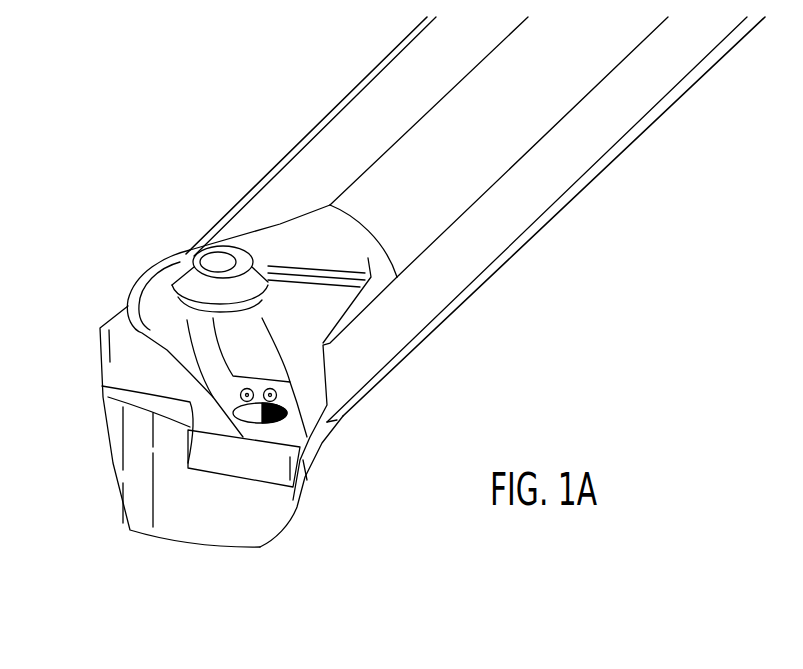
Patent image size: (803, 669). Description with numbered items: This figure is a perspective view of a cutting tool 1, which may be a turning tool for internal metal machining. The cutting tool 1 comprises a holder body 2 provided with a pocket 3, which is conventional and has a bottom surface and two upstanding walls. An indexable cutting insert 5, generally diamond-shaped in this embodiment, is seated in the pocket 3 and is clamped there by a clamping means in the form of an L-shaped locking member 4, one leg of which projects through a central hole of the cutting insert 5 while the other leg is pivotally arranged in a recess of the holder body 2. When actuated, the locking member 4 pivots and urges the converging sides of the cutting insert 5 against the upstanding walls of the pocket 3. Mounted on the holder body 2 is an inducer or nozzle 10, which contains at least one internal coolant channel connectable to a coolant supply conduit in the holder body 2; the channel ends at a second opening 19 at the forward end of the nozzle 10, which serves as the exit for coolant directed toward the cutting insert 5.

The cutting tool 1 is at (177, 160).
The holder body 2 is at (472, 187).
The pocket 3 is at (92, 384).
The locking member 4 is at (292, 424).
The cutting insert 5 is at (260, 460).
The nozzle 10 is at (148, 280).
The second opening 19 is at (337, 420).